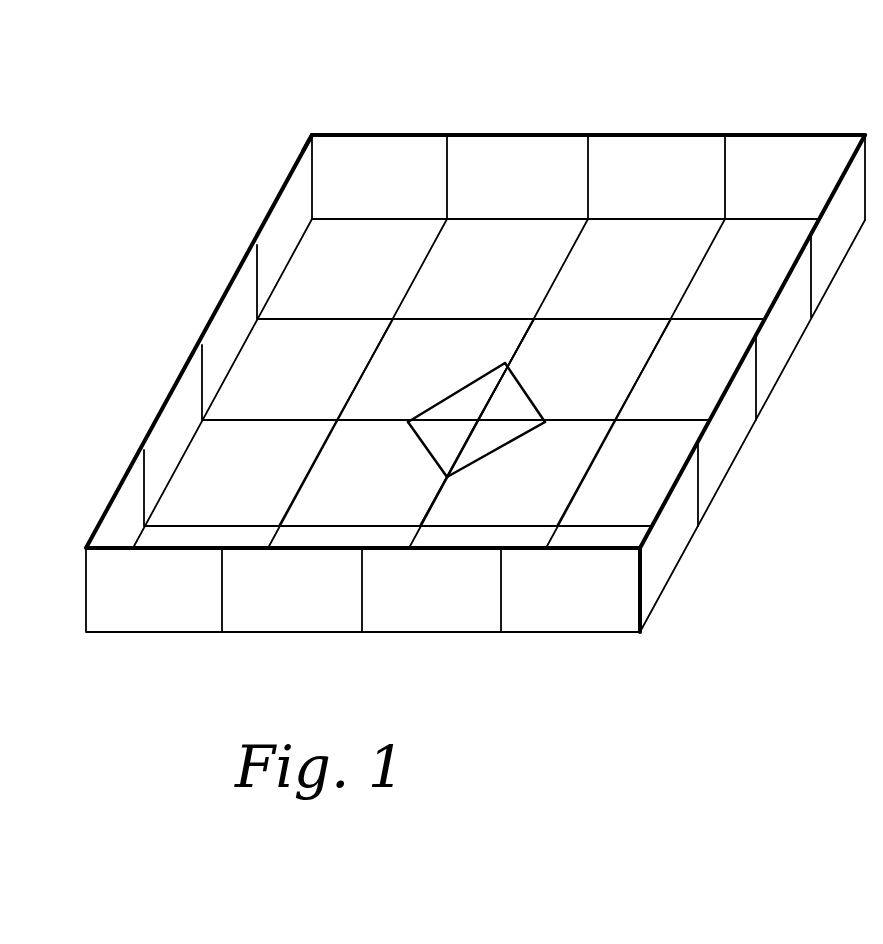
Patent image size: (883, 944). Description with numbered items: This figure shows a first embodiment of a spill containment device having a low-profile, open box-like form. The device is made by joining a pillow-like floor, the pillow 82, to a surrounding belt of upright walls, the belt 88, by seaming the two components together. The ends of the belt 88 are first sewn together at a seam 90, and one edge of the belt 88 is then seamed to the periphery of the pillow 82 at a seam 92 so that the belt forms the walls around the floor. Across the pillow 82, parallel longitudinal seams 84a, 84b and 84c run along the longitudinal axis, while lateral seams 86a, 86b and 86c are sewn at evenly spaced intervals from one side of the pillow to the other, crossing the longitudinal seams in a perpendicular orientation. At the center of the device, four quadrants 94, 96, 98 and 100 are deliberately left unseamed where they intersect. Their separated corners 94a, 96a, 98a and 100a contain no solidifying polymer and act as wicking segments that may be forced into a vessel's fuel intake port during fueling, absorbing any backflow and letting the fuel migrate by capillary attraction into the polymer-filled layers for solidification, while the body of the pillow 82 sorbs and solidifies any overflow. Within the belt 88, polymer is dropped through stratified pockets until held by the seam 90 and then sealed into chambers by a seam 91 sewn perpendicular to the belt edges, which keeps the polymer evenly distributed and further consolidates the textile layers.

The pillow 82 is at (670, 230).
The longitudinal seam 84a is at (275, 535).
The longitudinal seam 84b is at (407, 537).
The longitudinal seam 84c is at (547, 537).
The lateral seam 86a is at (168, 524).
The lateral seam 86b is at (277, 420).
The lateral seam 86c is at (310, 320).
The belt 88 is at (513, 160).
The seam 90 is at (315, 157).
The seam 91 is at (857, 153).
The seam 92 is at (412, 217).
The quadrant 94 is at (413, 333).
The corner 94a is at (467, 402).
The quadrant 96 is at (633, 333).
The corner 96a is at (508, 393).
The quadrant 98 is at (305, 513).
The corner 98a is at (435, 445).
The quadrant 100 is at (535, 513).
The corner 100a is at (497, 437).